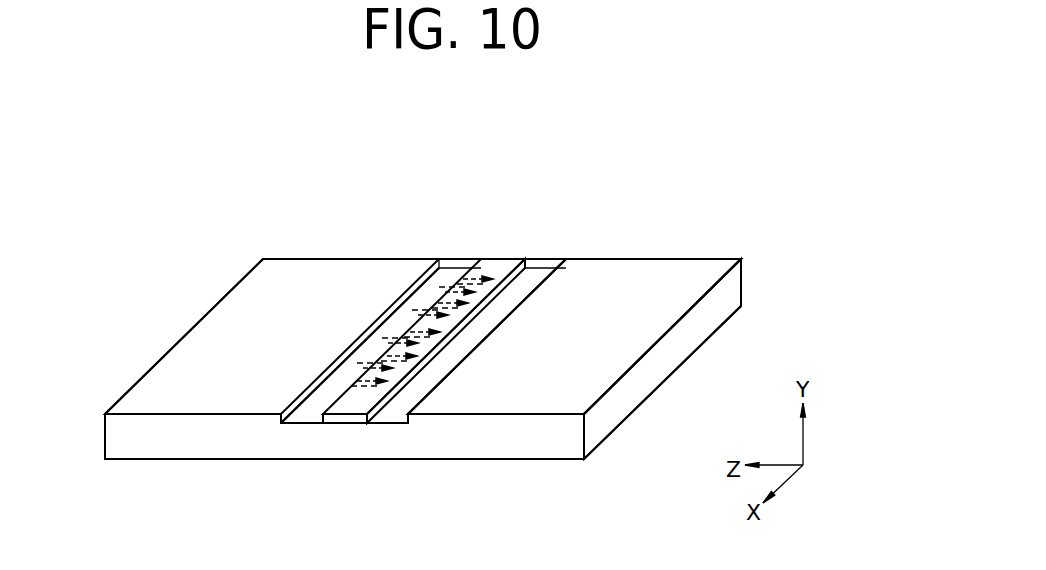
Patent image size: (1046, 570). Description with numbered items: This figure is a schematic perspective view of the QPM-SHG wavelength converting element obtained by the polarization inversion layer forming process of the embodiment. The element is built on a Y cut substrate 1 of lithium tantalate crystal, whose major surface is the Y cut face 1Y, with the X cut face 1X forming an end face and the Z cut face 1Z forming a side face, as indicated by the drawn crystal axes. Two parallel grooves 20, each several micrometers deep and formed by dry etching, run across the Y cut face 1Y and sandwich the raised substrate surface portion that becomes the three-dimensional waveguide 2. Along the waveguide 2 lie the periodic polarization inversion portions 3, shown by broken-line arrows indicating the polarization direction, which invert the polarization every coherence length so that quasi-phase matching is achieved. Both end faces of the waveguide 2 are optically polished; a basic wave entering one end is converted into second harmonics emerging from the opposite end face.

The substrate 1 is at (515, 448).
The X cut face 1X is at (268, 447).
The Y cut face 1Y is at (623, 272).
The Z cut face 1Z is at (703, 327).
The three-dimensional waveguide 2 is at (343, 425).
The polarization inversion portions 3 is at (485, 273).
The grooves 20 is at (460, 257).